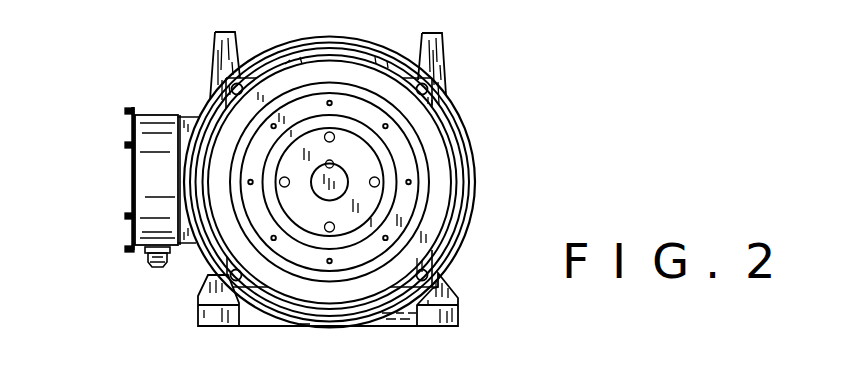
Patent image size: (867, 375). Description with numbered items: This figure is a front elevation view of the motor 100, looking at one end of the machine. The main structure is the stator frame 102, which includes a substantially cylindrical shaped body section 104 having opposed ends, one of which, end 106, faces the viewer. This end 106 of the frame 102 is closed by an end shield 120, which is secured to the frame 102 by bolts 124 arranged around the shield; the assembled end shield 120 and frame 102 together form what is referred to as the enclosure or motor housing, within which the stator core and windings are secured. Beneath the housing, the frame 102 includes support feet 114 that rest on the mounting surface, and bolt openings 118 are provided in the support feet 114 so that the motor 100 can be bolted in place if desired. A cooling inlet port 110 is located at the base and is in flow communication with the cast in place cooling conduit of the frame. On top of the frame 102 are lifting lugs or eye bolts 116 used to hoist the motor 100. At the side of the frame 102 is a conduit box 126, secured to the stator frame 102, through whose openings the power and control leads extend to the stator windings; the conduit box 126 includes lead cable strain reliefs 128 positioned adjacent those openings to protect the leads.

The motor 100 is at (490, 68).
The stator frame 102 is at (341, 25).
The body section 104 is at (476, 171).
The end 106 is at (452, 137).
The cooling inlet port 110 is at (405, 328).
The support feet 114 is at (228, 314).
The lifting lugs or eye bolts 116 is at (222, 50).
The bolt openings 118 is at (191, 320).
The end shield 120 is at (431, 212).
The bolts 124 is at (230, 88).
The conduit box 126 is at (147, 172).
The lead cable strain reliefs 128 is at (160, 266).